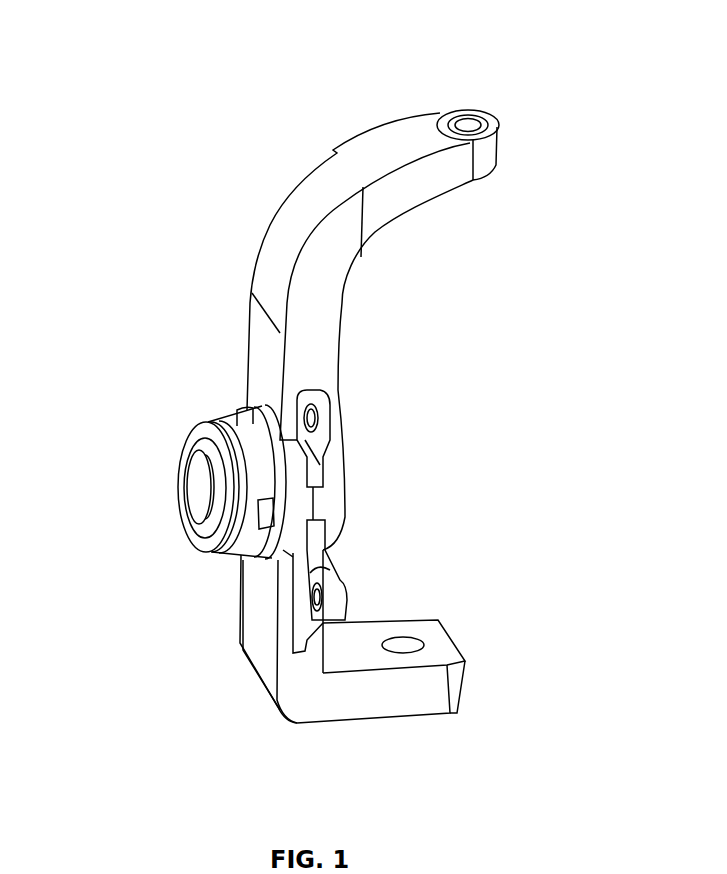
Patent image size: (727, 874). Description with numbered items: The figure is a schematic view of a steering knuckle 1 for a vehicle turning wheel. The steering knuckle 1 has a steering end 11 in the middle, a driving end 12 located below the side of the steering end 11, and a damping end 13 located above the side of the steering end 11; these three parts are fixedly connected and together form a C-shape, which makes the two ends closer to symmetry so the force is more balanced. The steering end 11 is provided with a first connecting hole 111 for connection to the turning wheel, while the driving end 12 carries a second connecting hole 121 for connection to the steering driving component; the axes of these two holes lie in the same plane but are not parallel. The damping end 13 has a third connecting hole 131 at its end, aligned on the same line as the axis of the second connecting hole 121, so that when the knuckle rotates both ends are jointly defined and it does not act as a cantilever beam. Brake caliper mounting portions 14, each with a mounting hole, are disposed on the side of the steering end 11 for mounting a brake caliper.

The steering knuckle 1 is at (252, 118).
The steering end 11 is at (232, 403).
The first connecting hole 111 is at (195, 483).
The driving end 12 is at (417, 692).
The second connecting hole 121 is at (403, 645).
The damping end 13 is at (403, 128).
The third connecting hole 131 is at (468, 118).
The brake caliper mounting portions 14 is at (325, 568).